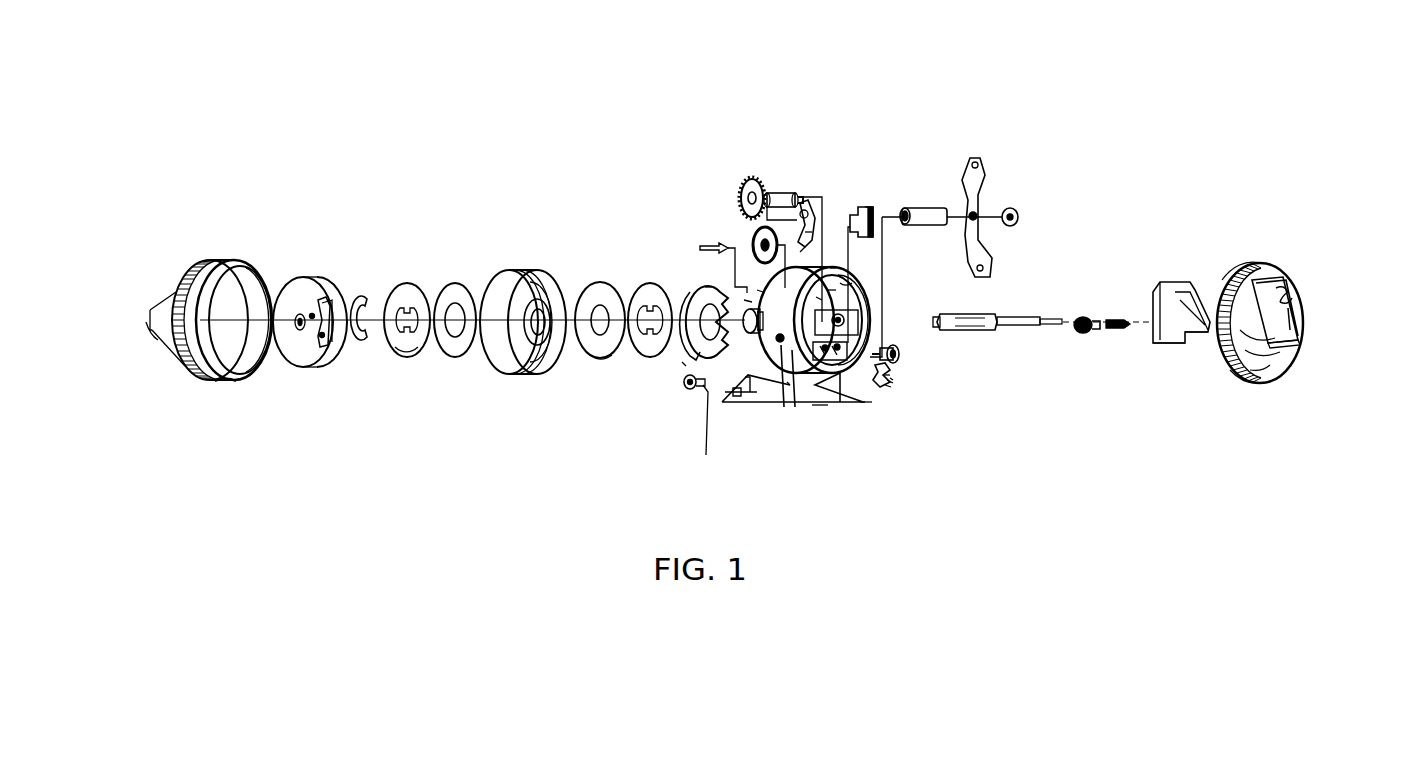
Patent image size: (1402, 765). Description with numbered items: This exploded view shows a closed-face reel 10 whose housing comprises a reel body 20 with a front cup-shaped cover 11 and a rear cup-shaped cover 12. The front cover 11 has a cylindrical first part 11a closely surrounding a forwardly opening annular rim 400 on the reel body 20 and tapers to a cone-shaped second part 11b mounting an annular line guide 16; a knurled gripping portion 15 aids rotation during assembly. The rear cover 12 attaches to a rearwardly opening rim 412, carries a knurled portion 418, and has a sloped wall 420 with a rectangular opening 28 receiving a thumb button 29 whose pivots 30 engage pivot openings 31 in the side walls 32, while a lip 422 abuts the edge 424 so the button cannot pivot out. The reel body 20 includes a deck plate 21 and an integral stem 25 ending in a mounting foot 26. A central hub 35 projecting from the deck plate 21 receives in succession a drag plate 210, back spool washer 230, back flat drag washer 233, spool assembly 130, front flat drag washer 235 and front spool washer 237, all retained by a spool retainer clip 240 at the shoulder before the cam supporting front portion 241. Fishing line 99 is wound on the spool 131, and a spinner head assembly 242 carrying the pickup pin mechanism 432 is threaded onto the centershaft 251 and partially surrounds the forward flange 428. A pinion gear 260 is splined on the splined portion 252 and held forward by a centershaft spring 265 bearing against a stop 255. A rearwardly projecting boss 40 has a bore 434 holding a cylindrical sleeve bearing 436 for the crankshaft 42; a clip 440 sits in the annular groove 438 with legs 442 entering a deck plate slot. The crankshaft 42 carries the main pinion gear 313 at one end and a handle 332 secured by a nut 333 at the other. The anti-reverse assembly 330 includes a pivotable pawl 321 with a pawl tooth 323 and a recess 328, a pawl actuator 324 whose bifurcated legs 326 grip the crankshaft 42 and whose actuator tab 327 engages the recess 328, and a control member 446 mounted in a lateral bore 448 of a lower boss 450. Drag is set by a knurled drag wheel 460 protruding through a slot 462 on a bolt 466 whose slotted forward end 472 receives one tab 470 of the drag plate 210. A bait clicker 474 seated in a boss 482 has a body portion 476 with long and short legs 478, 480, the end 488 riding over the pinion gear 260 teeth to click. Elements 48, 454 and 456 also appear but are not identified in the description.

The reel 10 is at (872, 108).
The front cup-shaped cover 11 is at (215, 262).
The cylindrically shaped first part 11a is at (218, 380).
The cone-shaped second part 11b is at (165, 348).
The knurled gripping portion 15 is at (213, 262).
The annular line guide 16 is at (148, 330).
The spinner head assembly 242 is at (322, 300).
The pickup pin mechanism 432 is at (318, 363).
The spool retainer clip 240 is at (360, 296).
The front flat drag washer 235 is at (428, 264).
The front spool washer 237 is at (403, 352).
The forward flange 428 is at (455, 283).
The fishing line 99 is at (515, 272).
The spool assembly 130 is at (491, 318).
The spool 131 is at (543, 300).
The back spool washer 230 is at (600, 283).
The back flat drag washer 233 is at (590, 356).
The drag plate 210 is at (667, 262).
The knurled drag wheel 460 is at (755, 232).
The tabs 470 is at (690, 290).
The short leg 480 is at (682, 362).
The cam supporting front portion 241 is at (705, 287).
The forward end of bolt 472 is at (716, 257).
The central hub 35 is at (748, 340).
The main pinion gear 313 is at (752, 180).
The crankshaft 42 is at (790, 193).
The bifurcated legs 326 is at (805, 205).
The actuator tab 327 is at (810, 240).
The pawl actuator 324 is at (805, 247).
The reel body 20 is at (830, 268).
The clip 440 is at (868, 215).
The forwardly projecting legs 442 is at (865, 207).
The cylindrical sleeve bearing 436 is at (933, 207).
The annular groove 438 is at (915, 226).
The handle 332 is at (988, 200).
The nut 333 is at (1015, 212).
The stem 25 is at (798, 395).
The mounting foot 26 is at (855, 405).
The laterally directed bore 434 is at (868, 322).
The opening 48 is at (843, 283).
The rearwardly opening rim 412 is at (830, 290).
The deck plate 21 is at (820, 297).
The rearwardly projecting boss 40 is at (855, 310).
The boss 482 is at (795, 380).
The long leg 478 is at (705, 380).
The forwardly opening annular rim 400 is at (787, 385).
The end of the clicker 488 is at (725, 395).
The body portion 476 is at (693, 385).
The bait clicker 474 is at (700, 440).
The slot 462 is at (760, 290).
The longitudinally directed bolt 466 is at (748, 300).
The lateral bore 448 is at (820, 405).
The boss 450 is at (868, 405).
The control member 446 is at (900, 357).
The knob pin 456 is at (897, 350).
The spring clip 454 is at (892, 372).
The recess 328 is at (895, 375).
The anti-reverse assembly 330 is at (893, 377).
The pawl tooth 323 is at (893, 378).
The pivotable pawl 321 is at (893, 380).
The reduced diameter splined portion 252 is at (1022, 316).
The centershaft 251 is at (968, 330).
The stop 255 is at (1060, 318).
The pinion gear 260 is at (1082, 333).
The centershaft spring 265 is at (1120, 318).
The pivots 30 is at (1157, 290).
The lip 422 is at (1173, 348).
The thumb button 29 is at (1183, 327).
The rear cup-shaped cover 12 is at (1275, 263).
The sloped wall 420 is at (1228, 290).
The knurled portion 418 is at (1250, 383).
The rectangular opening 28 is at (1290, 320).
The edge 424 is at (1297, 340).
The side walls 32 is at (1285, 288).
The pivot openings 31 is at (1288, 300).